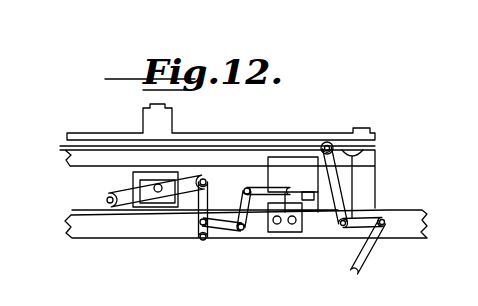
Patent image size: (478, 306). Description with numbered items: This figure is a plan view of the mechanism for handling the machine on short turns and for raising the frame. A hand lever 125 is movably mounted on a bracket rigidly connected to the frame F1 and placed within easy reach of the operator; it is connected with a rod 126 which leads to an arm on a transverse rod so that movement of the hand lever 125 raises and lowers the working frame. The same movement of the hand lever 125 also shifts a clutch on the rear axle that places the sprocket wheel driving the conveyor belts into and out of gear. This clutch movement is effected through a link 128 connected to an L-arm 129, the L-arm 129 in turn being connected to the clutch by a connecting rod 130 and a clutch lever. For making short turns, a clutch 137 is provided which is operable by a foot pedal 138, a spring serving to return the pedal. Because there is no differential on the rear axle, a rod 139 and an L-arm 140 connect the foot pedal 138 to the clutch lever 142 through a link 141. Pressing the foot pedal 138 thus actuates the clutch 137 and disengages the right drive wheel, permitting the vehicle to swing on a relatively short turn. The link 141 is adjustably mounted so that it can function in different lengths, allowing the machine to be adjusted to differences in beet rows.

The hand lever 125 is at (311, 138).
The rod 126 is at (218, 148).
The frame F1 is at (106, 222).
The clutch 137 is at (140, 167).
The clutch lever 142 is at (102, 191).
The link 141 is at (198, 200).
The L-arm 140 is at (217, 228).
The rod 139 is at (258, 196).
The foot pedal 138 is at (293, 194).
The link 128 is at (362, 155).
The L-arm 129 is at (336, 187).
The connecting rod 130 is at (358, 263).